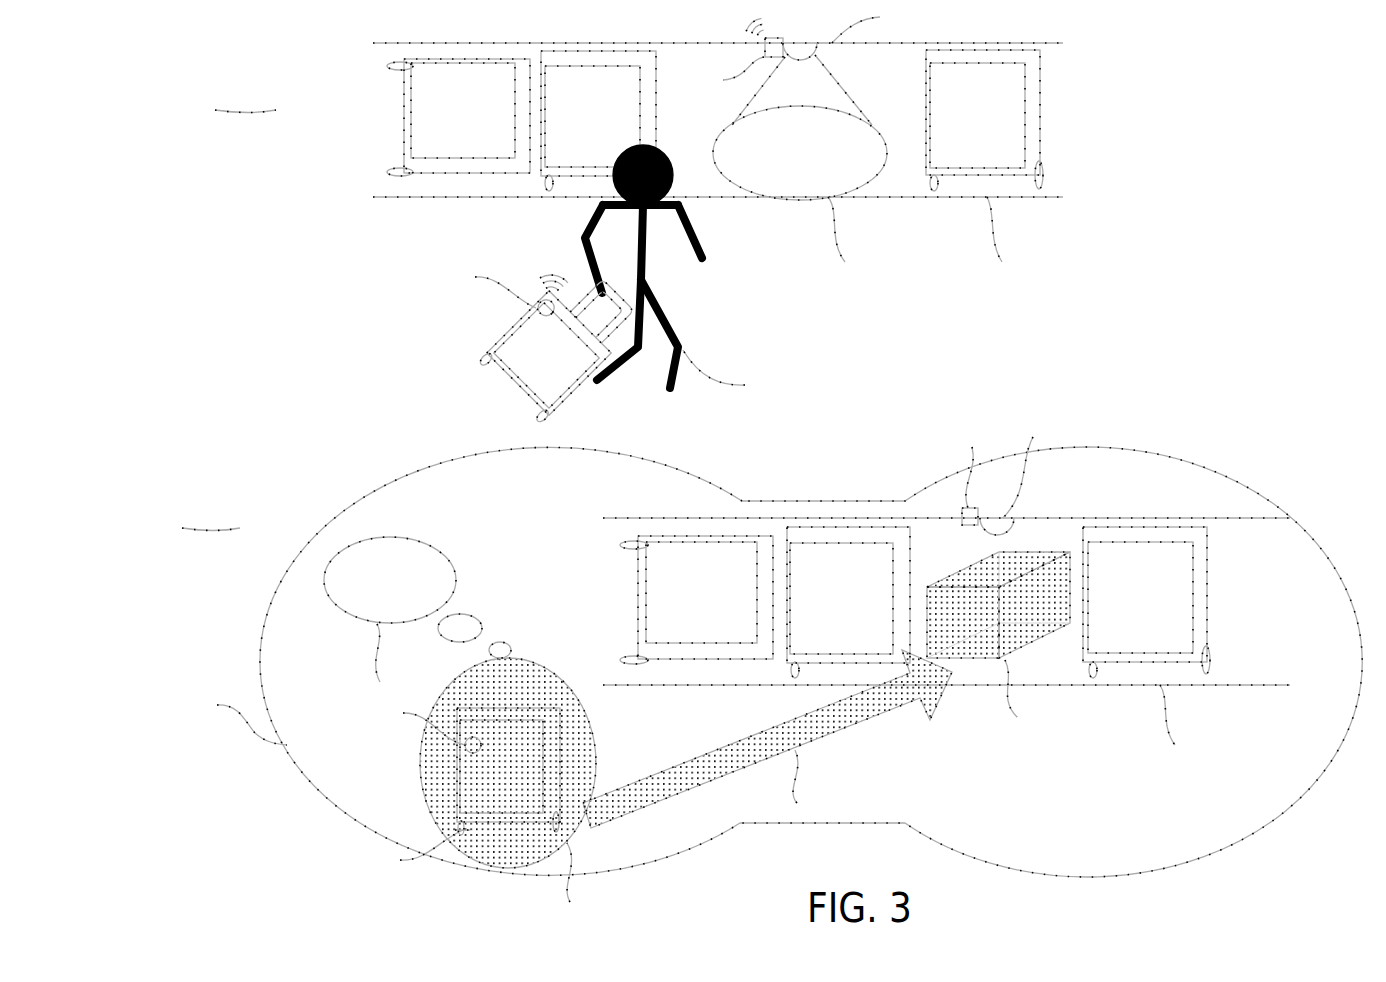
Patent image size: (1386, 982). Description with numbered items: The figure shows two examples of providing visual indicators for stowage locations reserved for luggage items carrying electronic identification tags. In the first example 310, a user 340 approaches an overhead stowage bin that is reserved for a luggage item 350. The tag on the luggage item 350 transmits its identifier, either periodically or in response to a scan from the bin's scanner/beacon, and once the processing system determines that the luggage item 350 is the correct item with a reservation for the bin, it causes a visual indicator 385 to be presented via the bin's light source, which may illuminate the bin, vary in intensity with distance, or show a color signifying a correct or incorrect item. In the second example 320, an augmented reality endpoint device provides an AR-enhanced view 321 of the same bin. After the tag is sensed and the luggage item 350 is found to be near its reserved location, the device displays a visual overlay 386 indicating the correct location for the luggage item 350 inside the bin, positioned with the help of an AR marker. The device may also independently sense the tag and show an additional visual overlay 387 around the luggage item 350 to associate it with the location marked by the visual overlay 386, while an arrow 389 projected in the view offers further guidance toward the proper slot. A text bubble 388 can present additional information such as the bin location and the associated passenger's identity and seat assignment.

The first example 310 is at (609, 120).
The second example 320 is at (706, 595).
The AR-enhanced view 321 is at (758, 662).
The user 340 is at (684, 272).
The luggage item 350 is at (456, 790).
The visual indicator 385 is at (800, 189).
The visual overlay 386 is at (998, 641).
The additional visual overlay 387 is at (518, 788).
The text bubble 388 is at (417, 617).
The arrow 389 is at (767, 739).